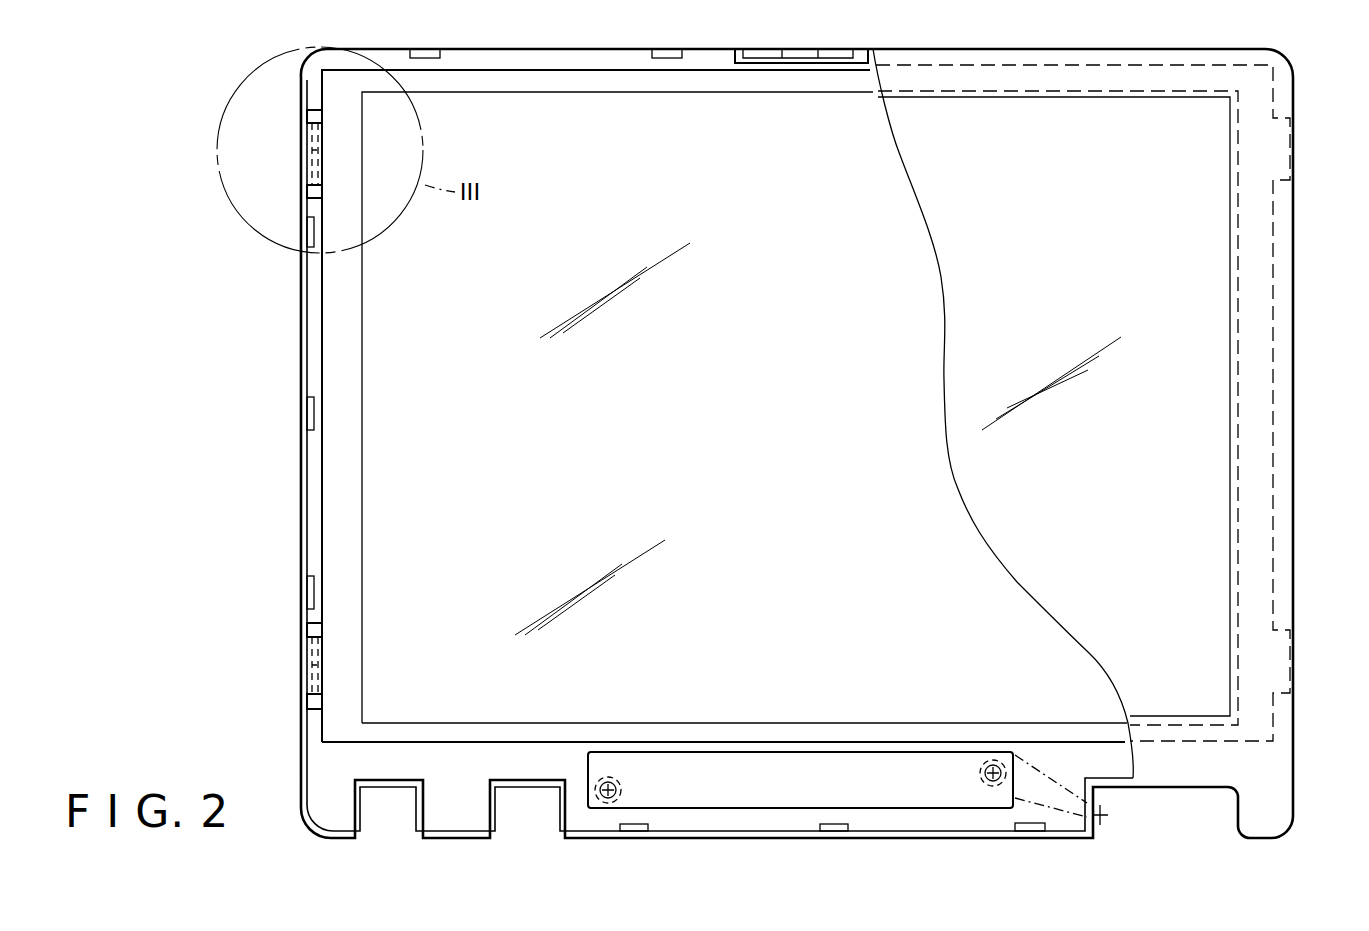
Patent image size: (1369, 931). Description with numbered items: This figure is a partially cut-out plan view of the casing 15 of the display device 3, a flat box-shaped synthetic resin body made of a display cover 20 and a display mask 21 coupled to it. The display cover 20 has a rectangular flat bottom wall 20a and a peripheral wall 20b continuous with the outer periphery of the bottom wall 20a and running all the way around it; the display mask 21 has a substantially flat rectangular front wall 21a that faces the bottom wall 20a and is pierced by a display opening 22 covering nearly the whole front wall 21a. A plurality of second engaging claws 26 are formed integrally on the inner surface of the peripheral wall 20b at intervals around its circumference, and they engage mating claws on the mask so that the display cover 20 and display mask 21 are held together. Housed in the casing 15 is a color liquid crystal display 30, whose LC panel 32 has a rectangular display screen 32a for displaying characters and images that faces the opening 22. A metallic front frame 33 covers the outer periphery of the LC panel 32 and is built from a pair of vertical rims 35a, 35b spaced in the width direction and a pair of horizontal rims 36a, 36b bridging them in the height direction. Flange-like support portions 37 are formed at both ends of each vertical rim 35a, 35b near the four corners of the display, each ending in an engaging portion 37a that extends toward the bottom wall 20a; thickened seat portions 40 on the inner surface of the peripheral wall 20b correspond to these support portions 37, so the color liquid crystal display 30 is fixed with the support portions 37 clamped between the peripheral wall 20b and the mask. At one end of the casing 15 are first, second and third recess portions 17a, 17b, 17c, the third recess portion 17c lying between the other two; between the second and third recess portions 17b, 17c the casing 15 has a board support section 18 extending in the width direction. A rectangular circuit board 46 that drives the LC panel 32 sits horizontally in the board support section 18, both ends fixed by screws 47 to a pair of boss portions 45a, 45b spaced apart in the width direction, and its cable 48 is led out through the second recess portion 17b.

The display device 3 is at (1296, 272).
The casing 15 is at (1288, 462).
The first recess portion 17a is at (413, 808).
The second recess portion 17b is at (1100, 790).
The third recess portion 17c is at (505, 808).
The board support section 18 is at (730, 820).
The display cover 20 is at (301, 460).
The bottom wall 20a is at (301, 745).
The peripheral wall 20b is at (301, 310).
The display mask 21 is at (970, 85).
The front wall 21a is at (1240, 255).
The display opening 22 is at (1229, 357).
The second engaging claws 26 is at (428, 62).
The color liquid crystal display 30 is at (386, 516).
The LC panel 32 is at (375, 368).
The display screen 32a is at (818, 439).
The front frame 33 is at (561, 736).
The vertical rim 35a is at (355, 338).
The vertical rim 35b is at (1265, 452).
The horizontal rim 36a is at (798, 75).
The horizontal rim 36b is at (884, 738).
The support portions 37 is at (308, 145).
The engaging portion 37a is at (312, 165).
The seat portions 40 is at (322, 193).
The boss portion 45a is at (624, 785).
The boss portion 45b is at (1002, 760).
The circuit board 46 is at (793, 765).
The screws 47 is at (608, 782).
The cable 48 is at (1102, 815).